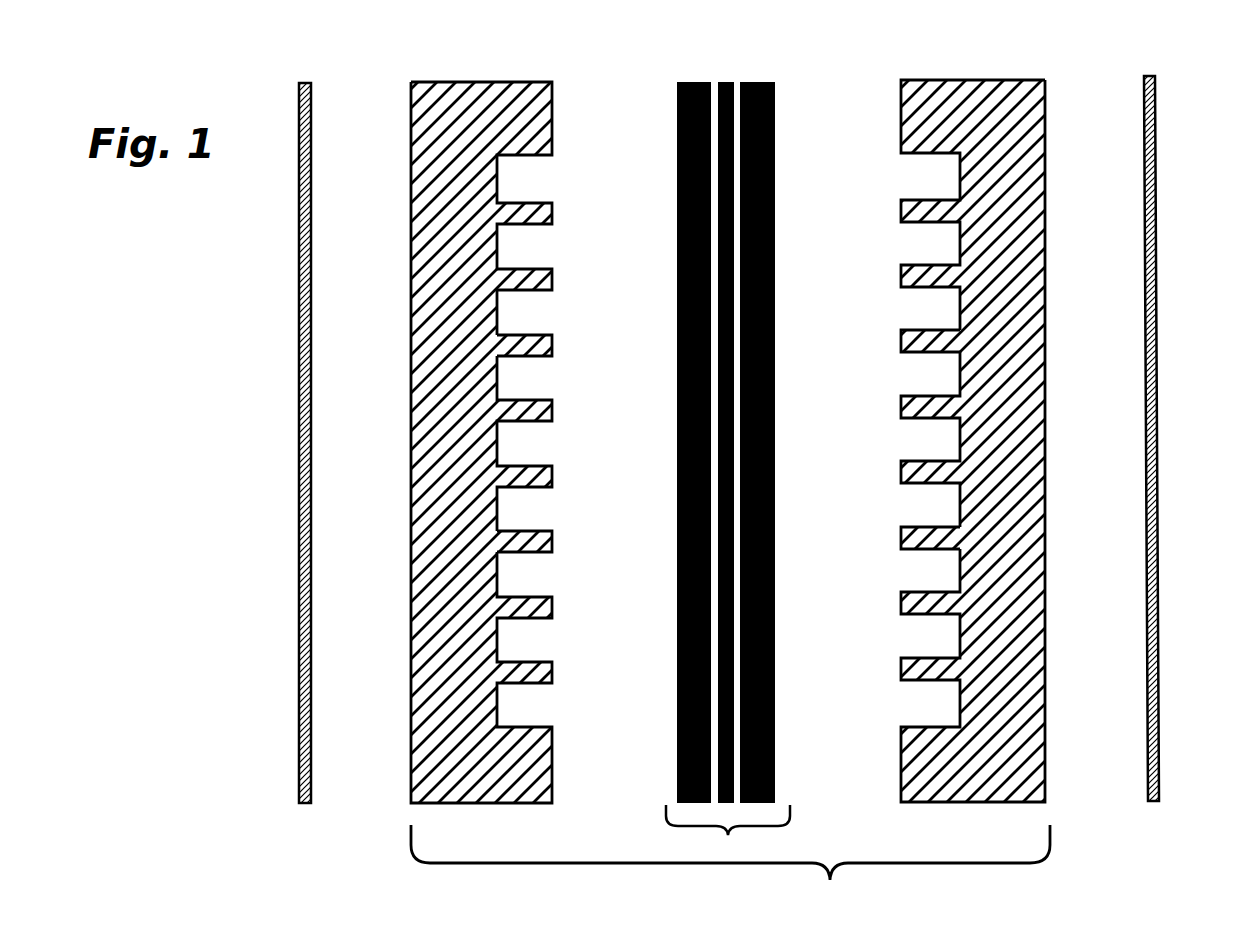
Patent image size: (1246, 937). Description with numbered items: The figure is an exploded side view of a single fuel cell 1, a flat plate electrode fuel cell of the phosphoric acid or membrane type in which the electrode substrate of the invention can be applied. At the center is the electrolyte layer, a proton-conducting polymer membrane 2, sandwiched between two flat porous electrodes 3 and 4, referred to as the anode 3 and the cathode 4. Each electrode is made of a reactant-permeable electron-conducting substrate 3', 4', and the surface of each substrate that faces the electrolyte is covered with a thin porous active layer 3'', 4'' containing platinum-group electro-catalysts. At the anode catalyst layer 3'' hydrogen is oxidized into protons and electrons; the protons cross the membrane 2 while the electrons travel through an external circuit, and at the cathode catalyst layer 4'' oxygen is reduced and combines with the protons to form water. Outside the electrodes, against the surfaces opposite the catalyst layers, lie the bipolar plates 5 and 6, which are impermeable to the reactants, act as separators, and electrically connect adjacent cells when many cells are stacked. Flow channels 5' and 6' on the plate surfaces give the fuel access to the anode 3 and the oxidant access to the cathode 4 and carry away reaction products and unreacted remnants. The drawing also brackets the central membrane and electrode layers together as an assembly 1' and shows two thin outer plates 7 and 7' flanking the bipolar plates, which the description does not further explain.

The single fuel cell 1 is at (730, 870).
The membrane electrode assembly 1' is at (728, 834).
The proton-conducting polymer membrane 2 is at (726, 82).
The anode 3 is at (779, 411).
The electron-conducting substrate 3' is at (794, 670).
The anode catalyst layer 3'' is at (797, 735).
The cathode 4 is at (678, 413).
The electron-conducting substrate 4' is at (663, 670).
The cathode catalyst layer 4'' is at (663, 735).
The bipolar plate 5 is at (996, 441).
The flow channels 5' is at (886, 444).
The bipolar plate 6 is at (453, 442).
The flow channels 6' is at (565, 442).
The cathode-side cooling plate 7 is at (1183, 438).
The anode-side cooling plate 7' is at (275, 443).